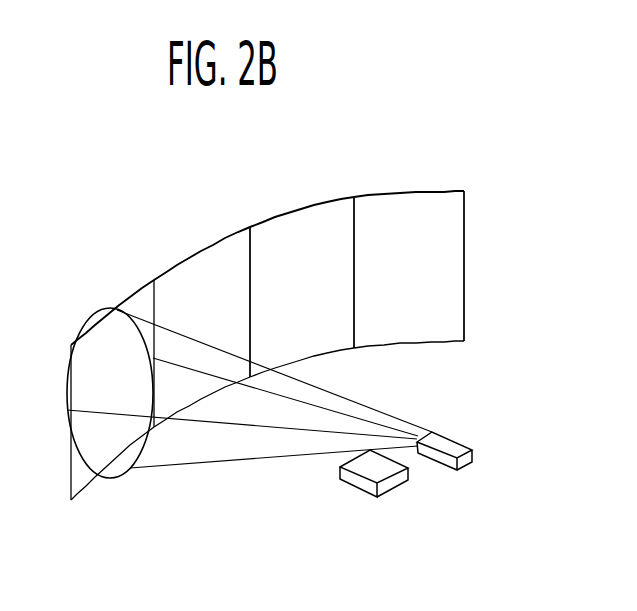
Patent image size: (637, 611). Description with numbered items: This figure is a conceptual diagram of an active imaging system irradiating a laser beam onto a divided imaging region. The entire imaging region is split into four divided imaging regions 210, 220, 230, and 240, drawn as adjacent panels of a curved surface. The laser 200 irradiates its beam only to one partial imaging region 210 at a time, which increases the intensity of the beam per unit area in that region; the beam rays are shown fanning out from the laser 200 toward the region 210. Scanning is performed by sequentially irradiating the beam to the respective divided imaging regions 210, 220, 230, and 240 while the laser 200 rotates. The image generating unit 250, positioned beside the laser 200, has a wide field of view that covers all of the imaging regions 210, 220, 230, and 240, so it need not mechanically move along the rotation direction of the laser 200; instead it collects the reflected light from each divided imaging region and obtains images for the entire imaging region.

The laser 200 is at (463, 472).
The divided imaging region 210 is at (113, 309).
The divided imaging region 220 is at (196, 252).
The divided imaging region 230 is at (292, 211).
The divided imaging region 240 is at (408, 192).
The image generating unit 250 is at (366, 494).